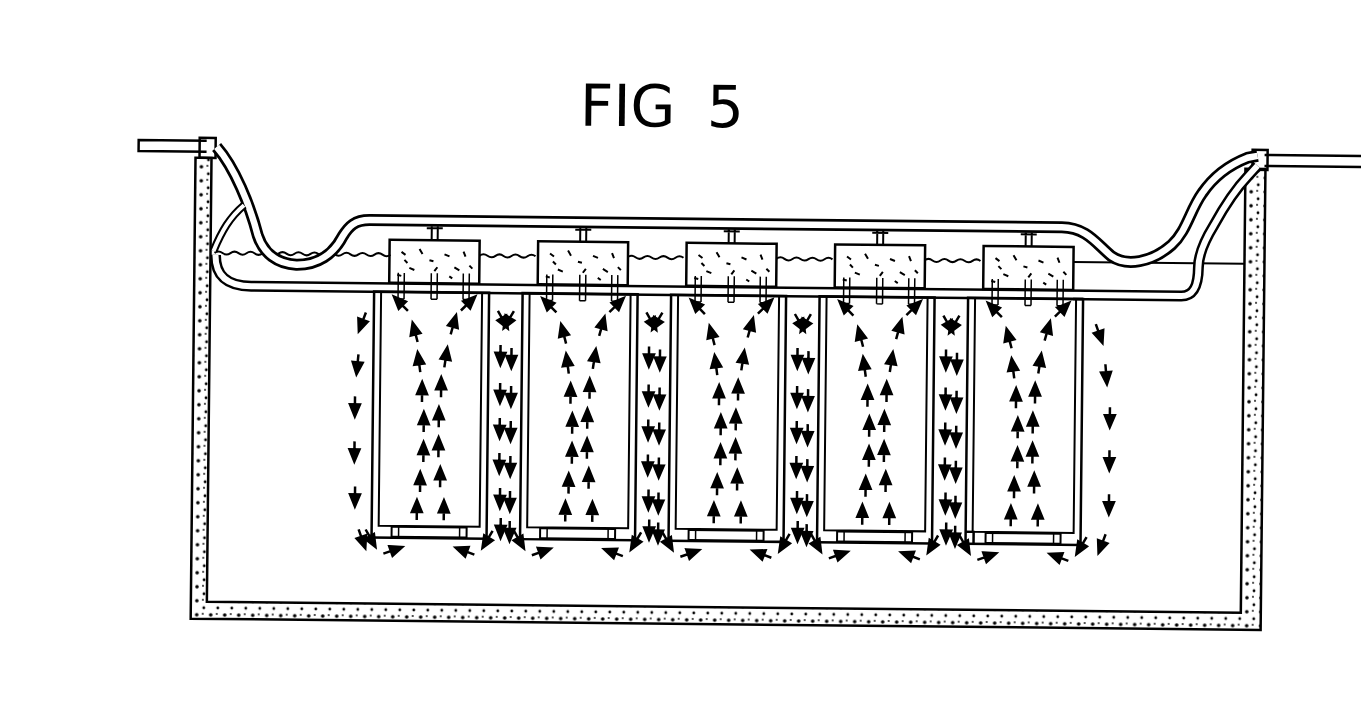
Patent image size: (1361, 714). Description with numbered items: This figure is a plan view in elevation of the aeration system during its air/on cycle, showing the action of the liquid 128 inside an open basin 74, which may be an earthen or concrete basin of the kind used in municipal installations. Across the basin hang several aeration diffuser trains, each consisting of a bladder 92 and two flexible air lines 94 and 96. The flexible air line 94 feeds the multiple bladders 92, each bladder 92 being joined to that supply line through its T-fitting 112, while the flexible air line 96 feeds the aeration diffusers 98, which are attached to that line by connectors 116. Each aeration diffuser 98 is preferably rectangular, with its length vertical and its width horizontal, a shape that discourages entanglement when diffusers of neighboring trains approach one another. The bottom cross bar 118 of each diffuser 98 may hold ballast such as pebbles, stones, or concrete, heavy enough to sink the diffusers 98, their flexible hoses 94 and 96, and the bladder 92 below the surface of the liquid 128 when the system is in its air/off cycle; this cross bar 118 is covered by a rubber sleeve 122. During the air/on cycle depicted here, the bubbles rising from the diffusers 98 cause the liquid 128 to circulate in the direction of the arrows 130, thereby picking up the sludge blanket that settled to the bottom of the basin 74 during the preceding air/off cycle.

The open basin 74 is at (1150, 626).
The bladder 92 is at (408, 258).
The flexible air line 94 is at (955, 218).
The flexible air line 96 is at (283, 297).
The aeration diffuser 98 is at (1082, 394).
The T-fitting 112 is at (873, 229).
The connector 116 is at (1086, 296).
The bottom cross bar 118 is at (961, 540).
The rubber sleeve 122 is at (1022, 538).
The liquid 128 is at (323, 256).
The arrows 130 is at (607, 554).